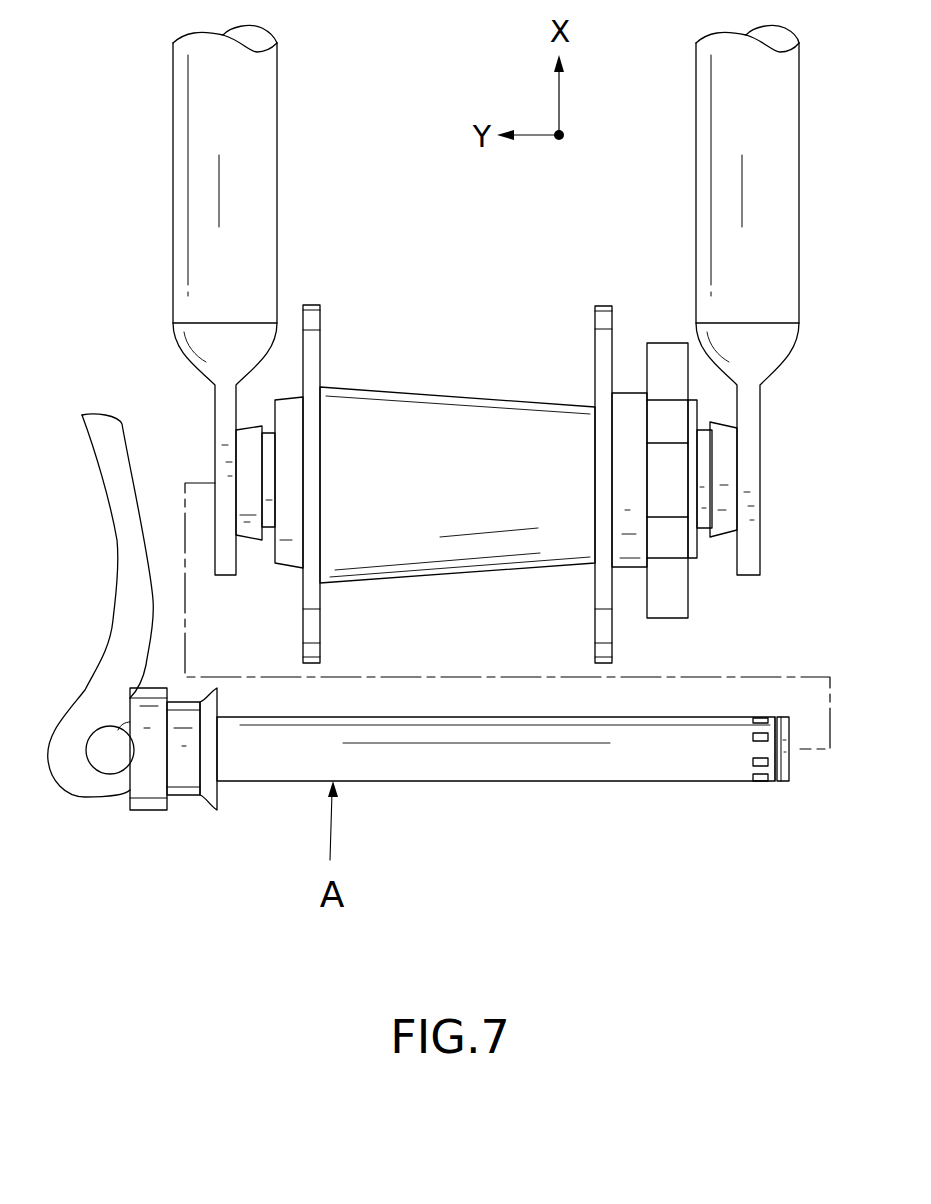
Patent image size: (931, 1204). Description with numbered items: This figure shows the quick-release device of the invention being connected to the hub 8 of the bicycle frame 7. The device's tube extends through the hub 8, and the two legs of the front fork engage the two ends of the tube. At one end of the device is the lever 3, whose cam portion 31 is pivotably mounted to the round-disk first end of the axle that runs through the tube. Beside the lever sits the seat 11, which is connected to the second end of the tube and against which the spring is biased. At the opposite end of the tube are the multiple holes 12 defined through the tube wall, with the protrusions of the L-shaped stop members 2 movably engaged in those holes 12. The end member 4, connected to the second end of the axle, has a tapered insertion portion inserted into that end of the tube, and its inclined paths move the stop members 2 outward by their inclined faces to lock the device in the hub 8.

The bicycle frame 7 is at (277, 175).
The hub 8 is at (455, 397).
The lever 3 is at (106, 592).
The cam portion 31 is at (48, 763).
The seat 11 is at (185, 778).
The holes 12 is at (724, 803).
The stop members 2 is at (753, 762).
The end member 4 is at (798, 792).